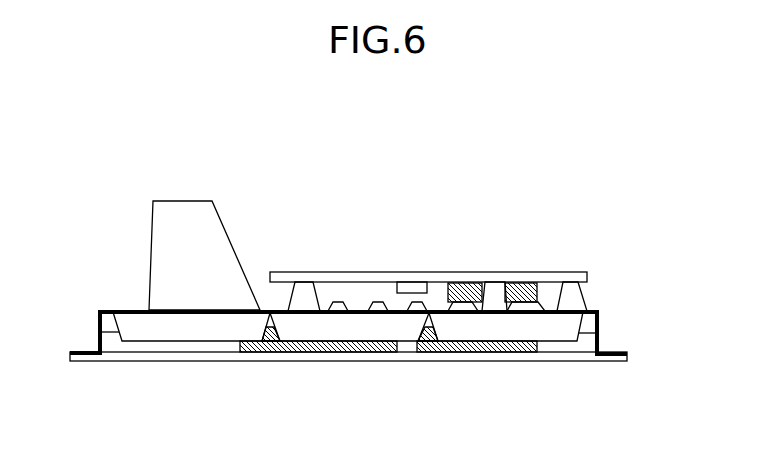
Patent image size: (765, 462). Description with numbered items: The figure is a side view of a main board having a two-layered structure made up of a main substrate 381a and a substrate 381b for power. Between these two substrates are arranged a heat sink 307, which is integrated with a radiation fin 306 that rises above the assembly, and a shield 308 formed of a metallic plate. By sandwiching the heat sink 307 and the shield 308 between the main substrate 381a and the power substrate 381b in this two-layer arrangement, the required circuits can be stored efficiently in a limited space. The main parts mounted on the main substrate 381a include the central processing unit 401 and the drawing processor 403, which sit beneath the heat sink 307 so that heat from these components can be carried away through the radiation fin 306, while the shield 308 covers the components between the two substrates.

The radiation fin 306 is at (204, 218).
The heat sink 307 is at (450, 304).
The shield 308 is at (326, 294).
The main substrate 381a is at (383, 323).
The substrate for power 381b is at (428, 254).
The central processing unit 401 is at (318, 387).
The drawing processor 403 is at (477, 387).